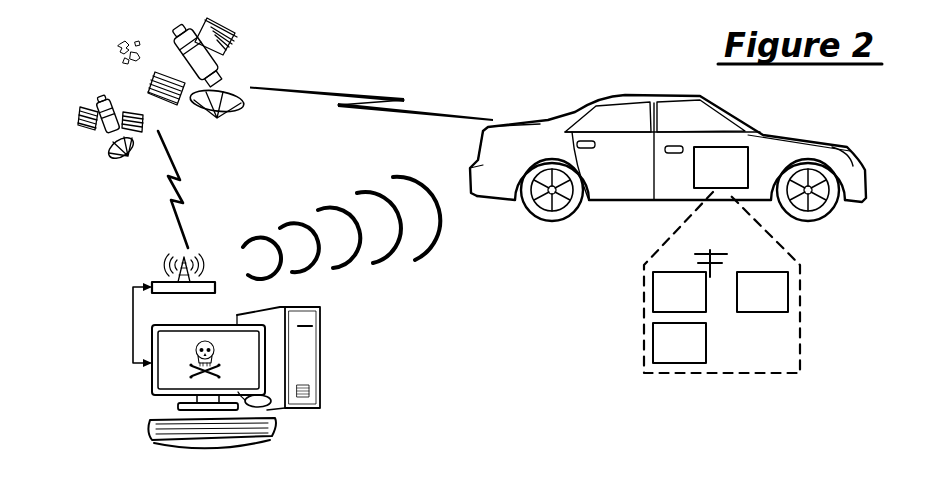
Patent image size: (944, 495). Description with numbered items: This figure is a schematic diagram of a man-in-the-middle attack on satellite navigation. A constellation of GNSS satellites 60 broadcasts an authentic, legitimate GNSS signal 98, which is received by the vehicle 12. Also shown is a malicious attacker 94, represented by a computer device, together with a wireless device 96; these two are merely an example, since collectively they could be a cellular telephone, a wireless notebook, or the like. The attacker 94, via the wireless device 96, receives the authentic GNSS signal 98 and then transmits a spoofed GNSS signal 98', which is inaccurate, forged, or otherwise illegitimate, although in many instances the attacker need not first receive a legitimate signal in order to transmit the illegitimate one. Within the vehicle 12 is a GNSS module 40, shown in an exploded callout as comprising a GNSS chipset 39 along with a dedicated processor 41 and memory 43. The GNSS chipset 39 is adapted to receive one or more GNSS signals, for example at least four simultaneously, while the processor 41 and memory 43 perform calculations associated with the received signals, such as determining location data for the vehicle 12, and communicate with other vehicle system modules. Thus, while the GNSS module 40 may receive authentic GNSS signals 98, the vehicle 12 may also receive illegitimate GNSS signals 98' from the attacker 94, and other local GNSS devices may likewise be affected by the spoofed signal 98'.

The vehicle 12 is at (668, 156).
The GNSS module 40 is at (721, 167).
The GNSS chipset 39 is at (690, 281).
The processor 41 is at (762, 292).
The memory 43 is at (679, 343).
The GNSS satellites 60 is at (72, 146).
The authentic GNSS signal 98 is at (325, 168).
The spoofed GNSS signal 98' is at (367, 240).
The wireless device 96 is at (151, 283).
The malicious attacker 94 is at (320, 363).